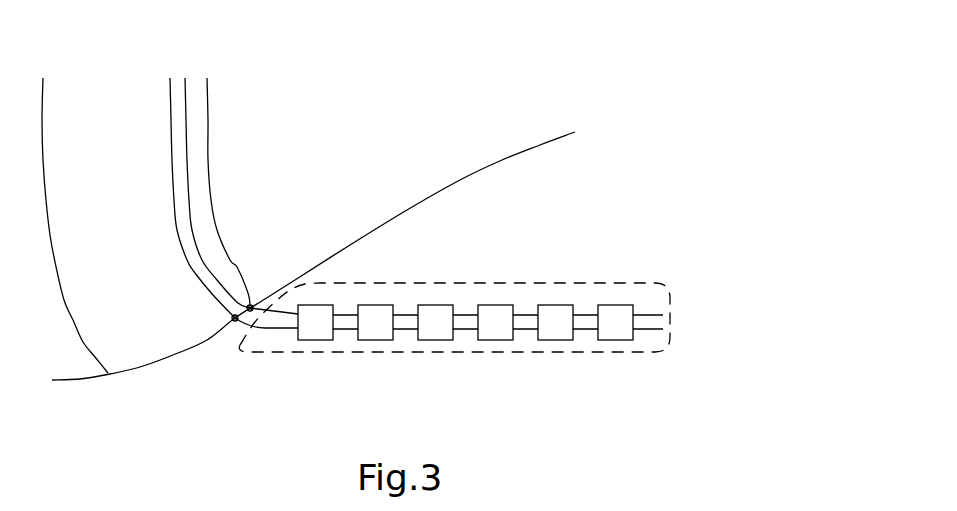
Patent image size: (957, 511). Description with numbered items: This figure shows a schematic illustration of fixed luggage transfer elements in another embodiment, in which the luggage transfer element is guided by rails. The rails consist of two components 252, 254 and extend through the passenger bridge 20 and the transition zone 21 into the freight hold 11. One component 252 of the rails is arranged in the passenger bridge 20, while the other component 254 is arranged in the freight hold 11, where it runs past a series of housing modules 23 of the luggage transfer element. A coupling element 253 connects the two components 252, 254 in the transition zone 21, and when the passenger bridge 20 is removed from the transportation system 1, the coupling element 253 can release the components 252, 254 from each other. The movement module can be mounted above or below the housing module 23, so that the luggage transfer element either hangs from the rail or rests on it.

The transportation system 1 is at (502, 177).
The passenger bridge 20 is at (208, 138).
The transition zone 21 is at (250, 308).
The rail component 252 is at (167, 150).
The coupling element 253 is at (250, 308).
The freight hold 11 is at (670, 296).
The rail component 254 is at (463, 312).
The housing module 23 is at (435, 328).